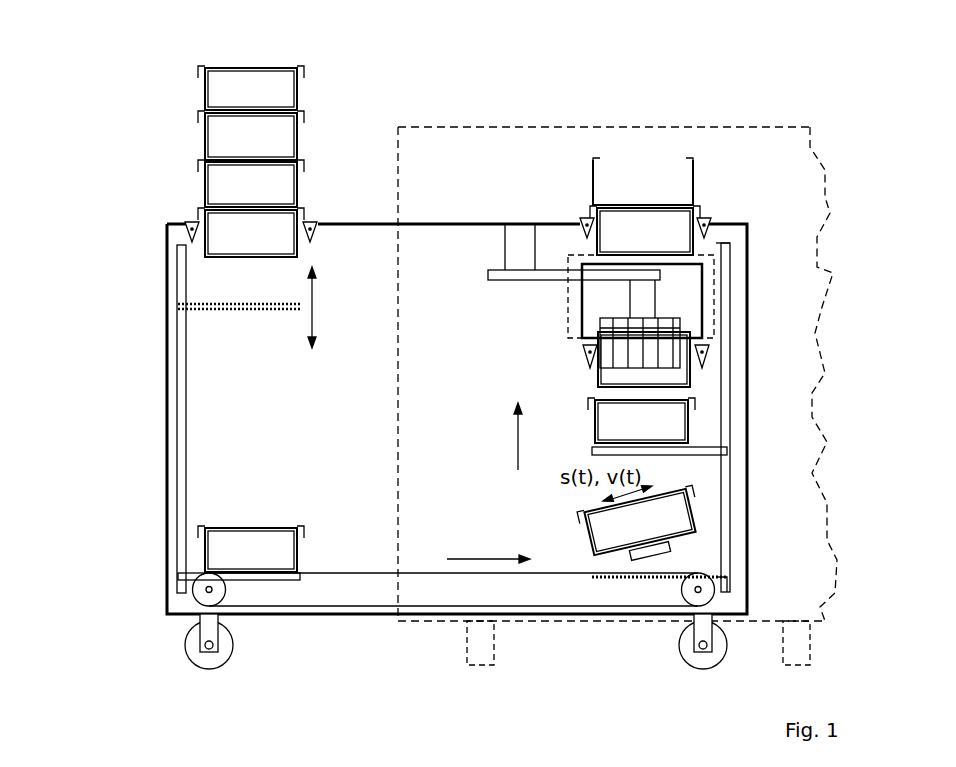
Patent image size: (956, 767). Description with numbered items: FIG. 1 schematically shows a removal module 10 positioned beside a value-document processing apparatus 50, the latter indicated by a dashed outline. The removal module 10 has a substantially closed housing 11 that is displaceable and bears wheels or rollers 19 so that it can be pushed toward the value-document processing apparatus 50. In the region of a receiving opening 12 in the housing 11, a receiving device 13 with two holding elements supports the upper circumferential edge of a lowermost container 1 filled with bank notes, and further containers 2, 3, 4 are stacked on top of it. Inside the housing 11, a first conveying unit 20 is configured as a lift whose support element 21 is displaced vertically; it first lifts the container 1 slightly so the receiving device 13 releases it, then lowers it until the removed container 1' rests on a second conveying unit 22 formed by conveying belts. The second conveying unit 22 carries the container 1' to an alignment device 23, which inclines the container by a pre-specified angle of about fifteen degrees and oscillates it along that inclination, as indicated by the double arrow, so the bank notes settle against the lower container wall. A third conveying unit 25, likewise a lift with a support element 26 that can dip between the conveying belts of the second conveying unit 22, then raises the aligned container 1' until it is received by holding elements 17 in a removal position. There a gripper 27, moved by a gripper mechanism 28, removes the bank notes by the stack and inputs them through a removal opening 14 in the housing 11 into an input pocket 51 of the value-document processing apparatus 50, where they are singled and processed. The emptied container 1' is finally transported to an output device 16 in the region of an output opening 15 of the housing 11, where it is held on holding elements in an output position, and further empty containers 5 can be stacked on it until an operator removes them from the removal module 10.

The container 1 is at (279, 232).
The removed container 1' is at (489, 389).
The container 2 is at (300, 188).
The container 3 is at (300, 138).
The container 4 is at (300, 90).
The further container 5 is at (593, 176).
The removal module 10 is at (397, 368).
The housing 11 is at (167, 252).
The receiving opening 12 is at (188, 201).
The receiving device 13 is at (318, 222).
The removal opening 14 is at (714, 302).
The output opening 15 is at (709, 193).
The output device 16 is at (582, 222).
The holding elements 17 is at (580, 356).
The wheels or rollers 19 is at (230, 648).
The first conveying unit 20 is at (176, 408).
The support element 21 is at (235, 310).
The second conveying unit 22 is at (404, 572).
The alignment device 23 is at (670, 548).
The third conveying unit 25 is at (740, 410).
The support element 26 is at (735, 455).
The gripper 27 is at (600, 326).
The gripper mechanism 28 is at (505, 245).
The value-document processing apparatus 50 is at (788, 138).
The input pocket 51 is at (722, 245).